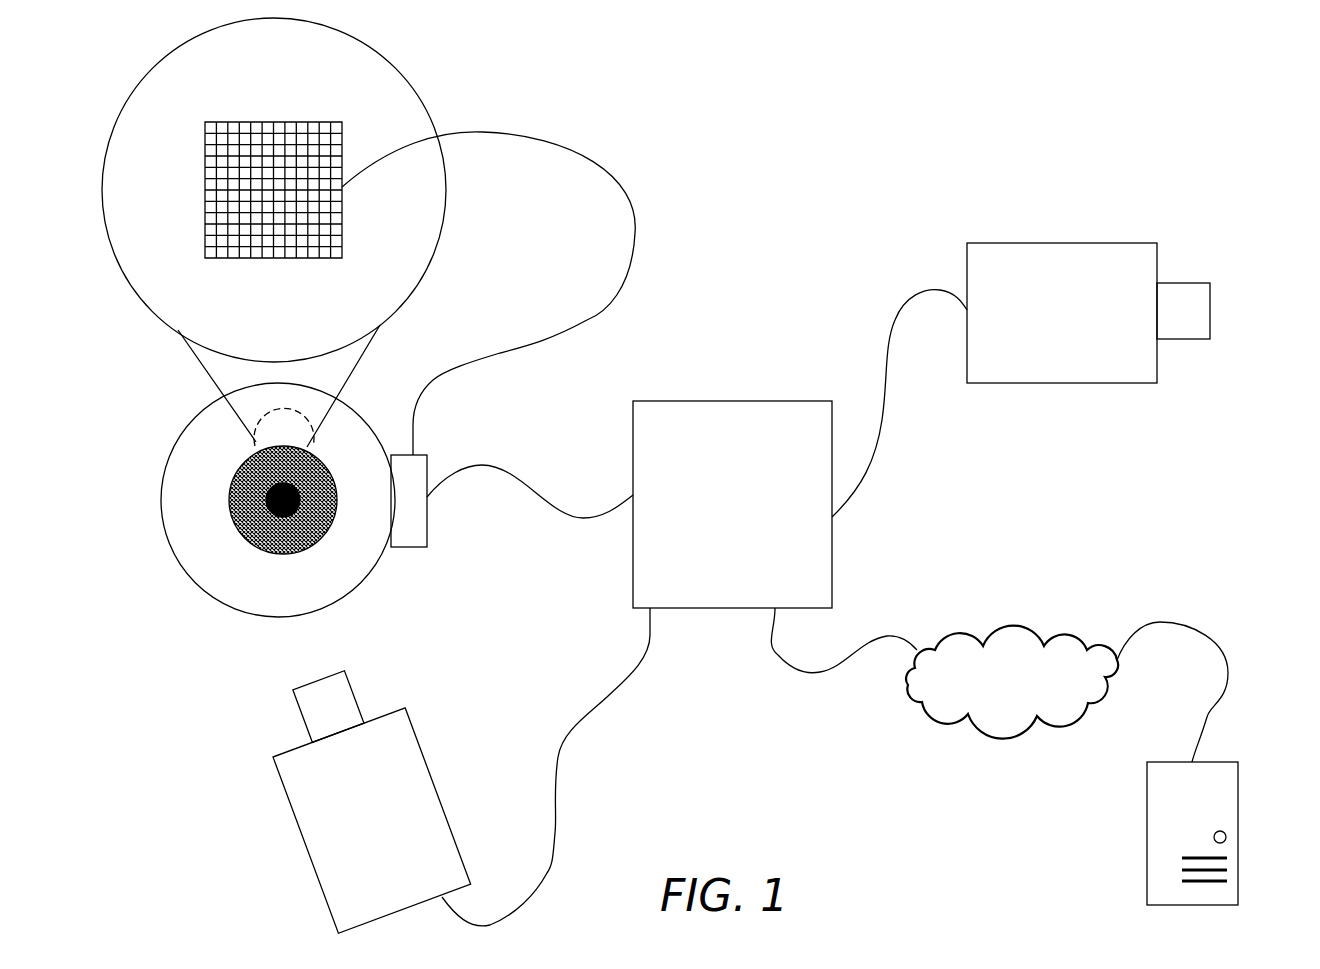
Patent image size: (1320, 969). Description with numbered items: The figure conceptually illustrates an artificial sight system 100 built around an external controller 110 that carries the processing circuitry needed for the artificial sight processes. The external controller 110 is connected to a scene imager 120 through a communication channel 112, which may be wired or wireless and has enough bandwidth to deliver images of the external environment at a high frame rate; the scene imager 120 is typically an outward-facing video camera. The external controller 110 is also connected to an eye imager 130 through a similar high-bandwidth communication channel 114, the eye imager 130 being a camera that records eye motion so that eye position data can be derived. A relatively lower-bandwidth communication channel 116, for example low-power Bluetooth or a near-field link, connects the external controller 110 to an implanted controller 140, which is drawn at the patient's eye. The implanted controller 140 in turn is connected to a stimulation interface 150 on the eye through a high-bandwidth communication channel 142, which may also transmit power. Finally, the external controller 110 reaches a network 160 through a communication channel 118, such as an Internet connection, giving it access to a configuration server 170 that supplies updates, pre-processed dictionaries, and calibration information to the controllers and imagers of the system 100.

The system 100 is at (1133, 117).
The external controller 110 is at (705, 400).
The communication channel 112 is at (877, 467).
The communication channel 114 is at (553, 850).
The communication channel 116 is at (542, 507).
The communication channel 118 is at (793, 673).
The scene imager 120 is at (1012, 243).
The eye imager 130 is at (307, 850).
The implanted controller 140 is at (427, 455).
The communication channel 142 is at (622, 195).
The stimulation interface 150 is at (317, 122).
The network 160 is at (1012, 633).
The configuration server 170 is at (1238, 762).